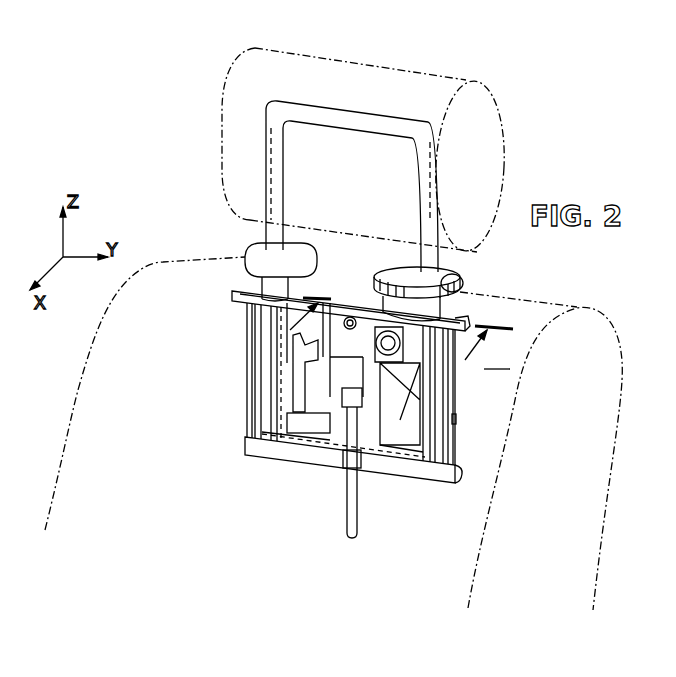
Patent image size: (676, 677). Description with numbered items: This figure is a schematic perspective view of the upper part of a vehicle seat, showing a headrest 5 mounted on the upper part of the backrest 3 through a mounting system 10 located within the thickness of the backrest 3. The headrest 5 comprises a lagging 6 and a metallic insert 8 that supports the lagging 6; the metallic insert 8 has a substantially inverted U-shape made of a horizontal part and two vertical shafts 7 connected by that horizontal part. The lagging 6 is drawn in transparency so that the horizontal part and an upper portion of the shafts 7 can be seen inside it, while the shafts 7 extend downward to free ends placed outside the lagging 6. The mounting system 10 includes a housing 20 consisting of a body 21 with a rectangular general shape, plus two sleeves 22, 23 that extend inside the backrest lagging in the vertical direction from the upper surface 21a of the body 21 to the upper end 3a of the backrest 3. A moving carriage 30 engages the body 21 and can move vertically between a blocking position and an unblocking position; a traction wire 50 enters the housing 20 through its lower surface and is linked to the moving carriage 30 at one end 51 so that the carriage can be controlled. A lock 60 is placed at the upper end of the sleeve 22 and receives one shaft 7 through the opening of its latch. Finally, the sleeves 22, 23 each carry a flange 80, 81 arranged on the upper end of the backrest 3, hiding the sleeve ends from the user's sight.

The backrest 3 is at (173, 285).
The upper end of the backrest 3a is at (549, 303).
The headrest 5 is at (377, 154).
The lagging 6 is at (250, 82).
The vertical shafts 7 is at (275, 155).
The metallic insert 8 is at (318, 115).
The mounting system 10 is at (353, 380).
The housing 20 is at (358, 380).
The body 21 is at (444, 403).
The upper surface of the body 21a is at (345, 310).
The sleeve 22 is at (445, 309).
The sleeve 23 is at (250, 282).
The moving carriage 30 is at (324, 372).
The traction wire 50 is at (356, 422).
The end of the traction wire 51 is at (352, 398).
The lock 60 is at (462, 281).
The flange 80 is at (258, 248).
The flange 81 is at (460, 266).